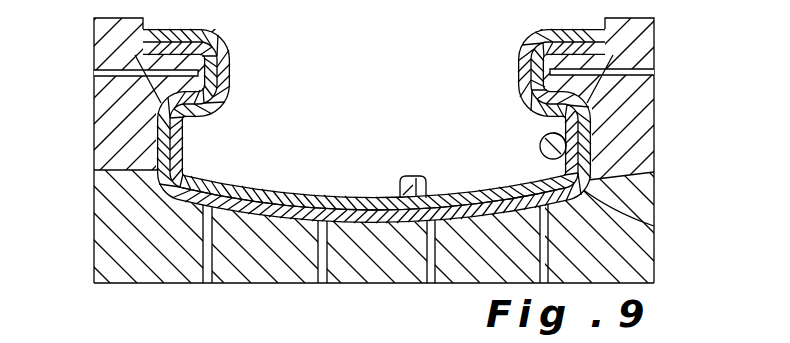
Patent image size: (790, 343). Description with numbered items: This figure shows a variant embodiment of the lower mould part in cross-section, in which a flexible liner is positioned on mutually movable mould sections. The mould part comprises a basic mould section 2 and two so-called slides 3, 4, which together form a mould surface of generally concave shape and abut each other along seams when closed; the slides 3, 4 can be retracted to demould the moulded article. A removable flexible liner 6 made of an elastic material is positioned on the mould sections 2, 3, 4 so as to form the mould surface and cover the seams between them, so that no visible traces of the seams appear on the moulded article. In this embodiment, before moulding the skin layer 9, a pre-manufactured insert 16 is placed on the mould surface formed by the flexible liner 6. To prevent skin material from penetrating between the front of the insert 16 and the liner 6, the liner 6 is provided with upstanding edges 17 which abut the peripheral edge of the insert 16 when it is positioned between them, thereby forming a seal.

The basic mould section 2 is at (363, 268).
The slide 3 is at (97, 132).
The slide 4 is at (642, 107).
The flexible liner 6 is at (654, 231).
The skin layer 9 is at (378, 199).
The pre-manufactured insert 16 is at (488, 181).
The upstanding edges 17 is at (428, 178).